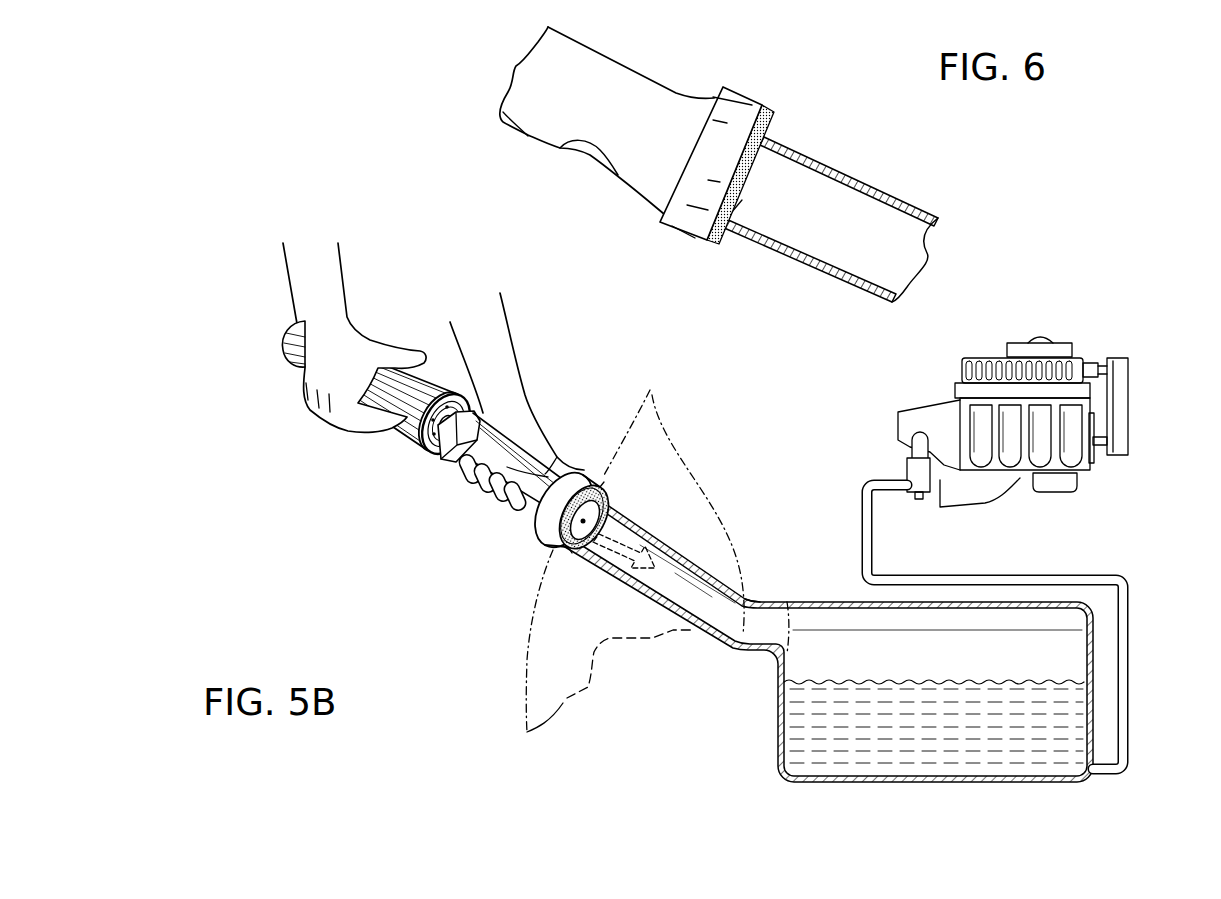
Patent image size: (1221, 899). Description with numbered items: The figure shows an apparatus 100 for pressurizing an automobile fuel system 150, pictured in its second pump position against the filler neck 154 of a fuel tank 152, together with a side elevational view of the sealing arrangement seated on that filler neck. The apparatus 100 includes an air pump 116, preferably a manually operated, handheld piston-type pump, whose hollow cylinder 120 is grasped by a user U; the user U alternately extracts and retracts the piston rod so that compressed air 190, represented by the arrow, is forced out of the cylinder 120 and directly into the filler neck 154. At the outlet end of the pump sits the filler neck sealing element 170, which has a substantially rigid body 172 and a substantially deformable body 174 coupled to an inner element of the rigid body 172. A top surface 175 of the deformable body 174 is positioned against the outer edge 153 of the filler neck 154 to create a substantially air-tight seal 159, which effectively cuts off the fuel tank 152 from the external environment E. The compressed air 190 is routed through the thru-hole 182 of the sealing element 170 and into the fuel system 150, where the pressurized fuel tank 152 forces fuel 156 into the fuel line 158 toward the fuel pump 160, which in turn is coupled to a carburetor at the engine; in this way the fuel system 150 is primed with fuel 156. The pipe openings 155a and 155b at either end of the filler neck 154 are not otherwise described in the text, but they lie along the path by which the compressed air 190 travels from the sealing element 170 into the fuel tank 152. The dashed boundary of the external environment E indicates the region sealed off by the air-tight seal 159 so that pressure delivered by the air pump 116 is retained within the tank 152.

In FIG. 5B, the apparatus 100 is at (439, 501).
In FIG. 5B, the air pump 116 is at (406, 446).
In FIG. 5B, the cylinder 120 is at (282, 366).
In FIG. 5B, the automobile fuel system 150 is at (1133, 336).
In FIG. 5B, the fuel tank 152 is at (871, 635).
In FIG. 6, the outer edge 153 is at (781, 139).
In FIG. 5B, the filler neck 154 is at (688, 552).
In FIG. 5B, the pipe first opening 155a is at (567, 568).
In FIG. 5B, the pipe second opening 155b is at (778, 600).
In FIG. 5B, the fuel 156 is at (1073, 750).
In FIG. 5B, the fuel line 158 is at (1125, 575).
In FIG. 6, the substantially air-tight seal 159 is at (738, 198).
In FIG. 5B, the fuel pump 160 is at (922, 485).
In FIG. 5B, the filler neck sealing element 170 is at (535, 540).
In FIG. 6, the substantially rigid body 172 is at (745, 90).
In FIG. 5B, the substantially rigid body 172 is at (575, 540).
In FIG. 6, the substantially deformable body 174 is at (718, 243).
In FIG. 5B, the substantially deformable body 174 is at (546, 549).
In FIG. 5B, the top surface 175 is at (608, 483).
In FIG. 5B, the thru-hole 182 is at (594, 517).
In FIG. 5B, the compressed air 190 is at (633, 577).
In FIG. 5B, the user U is at (345, 262).
In FIG. 6, the external environment E is at (495, 196).
In FIG. 5B, the external environment E is at (590, 757).